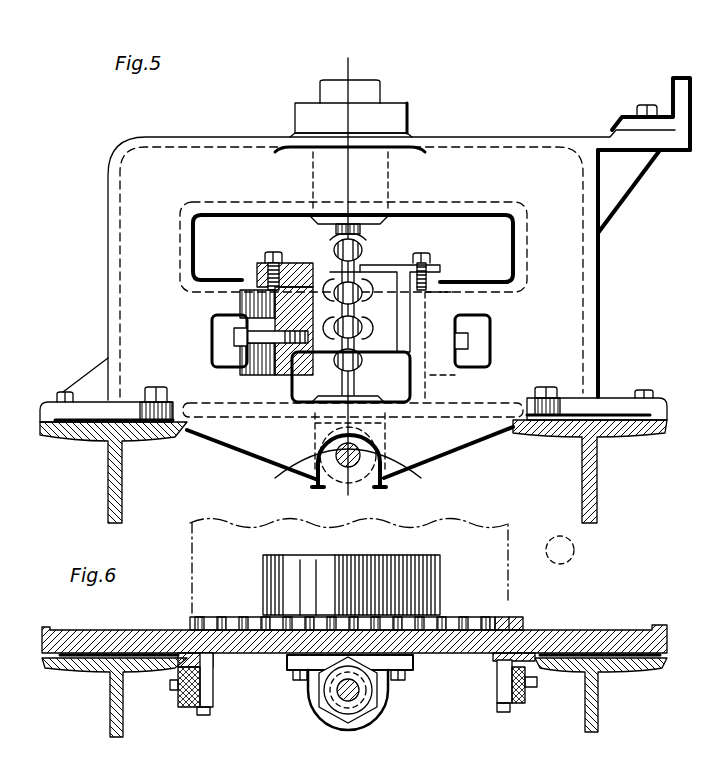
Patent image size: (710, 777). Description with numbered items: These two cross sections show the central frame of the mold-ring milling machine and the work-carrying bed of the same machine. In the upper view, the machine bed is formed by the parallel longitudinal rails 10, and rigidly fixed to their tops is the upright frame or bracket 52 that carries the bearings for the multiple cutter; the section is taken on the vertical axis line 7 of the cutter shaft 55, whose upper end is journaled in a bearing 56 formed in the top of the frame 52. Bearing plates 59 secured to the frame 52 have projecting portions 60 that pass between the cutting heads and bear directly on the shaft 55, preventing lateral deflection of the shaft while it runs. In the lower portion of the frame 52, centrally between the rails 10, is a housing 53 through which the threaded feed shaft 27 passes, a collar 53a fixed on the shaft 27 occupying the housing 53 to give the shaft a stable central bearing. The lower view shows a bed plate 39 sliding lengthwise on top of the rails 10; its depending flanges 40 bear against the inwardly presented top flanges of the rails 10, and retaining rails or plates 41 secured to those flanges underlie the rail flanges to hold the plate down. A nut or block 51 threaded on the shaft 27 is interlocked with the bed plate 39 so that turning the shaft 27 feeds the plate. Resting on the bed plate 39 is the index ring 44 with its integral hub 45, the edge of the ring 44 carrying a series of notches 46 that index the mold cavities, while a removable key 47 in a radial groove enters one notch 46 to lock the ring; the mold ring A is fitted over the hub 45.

In FIG. 5, the section line / shaft axis 7 is at (347, 273).
In FIG. 5, the rails 10 is at (108, 478).
In FIG. 6, the rails 10 is at (108, 706).
In FIG. 5, the shaft 27 is at (360, 456).
In FIG. 6, the shaft 27 is at (362, 695).
In FIG. 6, the bed plates 39 is at (602, 628).
In FIG. 6, the depending flanges 40 is at (213, 685).
In FIG. 6, the retaining rails or plates 41 is at (183, 713).
In FIG. 6, the index plate or ring 44 is at (227, 618).
In FIG. 6, the annular flange or hub 45 is at (310, 566).
In FIG. 6, the notches 46 is at (287, 632).
In FIG. 6, the key 47 is at (520, 618).
In FIG. 6, the nuts or blocks 51 is at (317, 703).
In FIG. 5, the upright frame or bracket 52 is at (128, 232).
In FIG. 5, the housing 53 is at (300, 468).
In FIG. 5, the collar 53a is at (366, 470).
In FIG. 5, the shaft of the multiple cutter 55 is at (366, 238).
In FIG. 5, the bearing 56 is at (412, 118).
In FIG. 5, the bearing plates 59 is at (283, 260).
In FIG. 5, the projecting portions 60 is at (330, 270).
In FIG. 6, the mold rings A is at (544, 543).